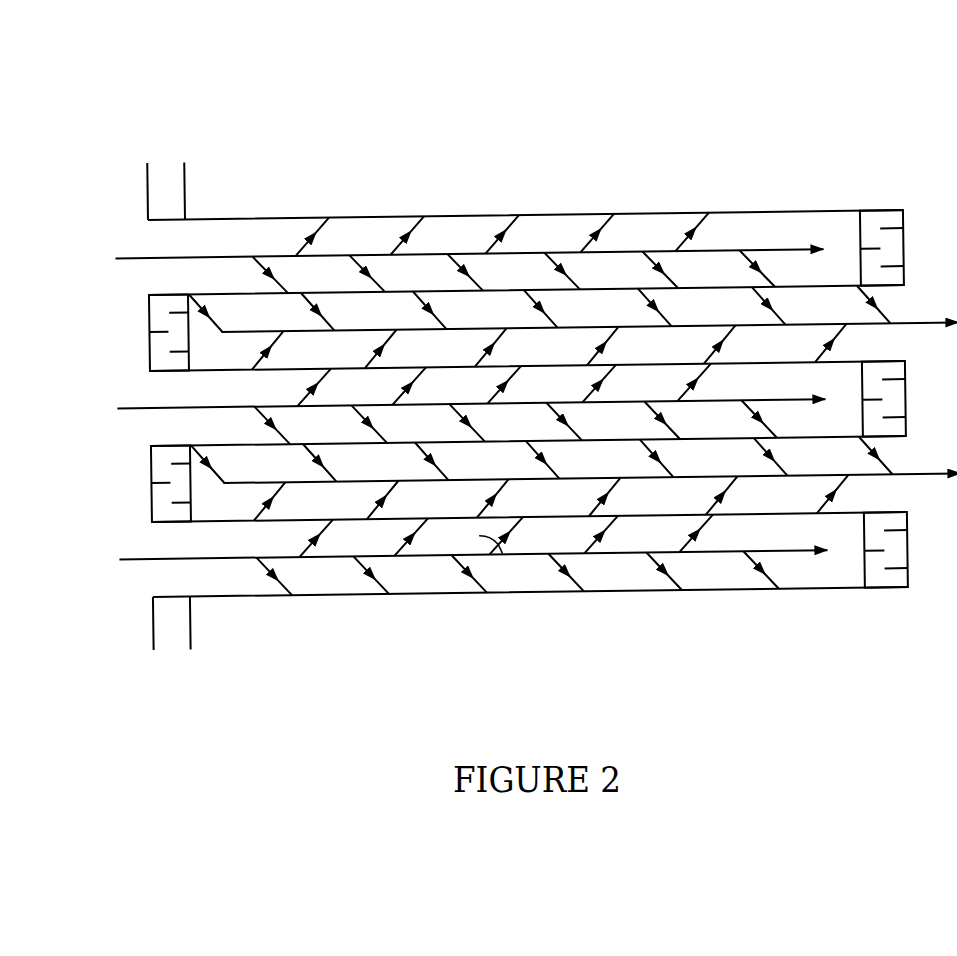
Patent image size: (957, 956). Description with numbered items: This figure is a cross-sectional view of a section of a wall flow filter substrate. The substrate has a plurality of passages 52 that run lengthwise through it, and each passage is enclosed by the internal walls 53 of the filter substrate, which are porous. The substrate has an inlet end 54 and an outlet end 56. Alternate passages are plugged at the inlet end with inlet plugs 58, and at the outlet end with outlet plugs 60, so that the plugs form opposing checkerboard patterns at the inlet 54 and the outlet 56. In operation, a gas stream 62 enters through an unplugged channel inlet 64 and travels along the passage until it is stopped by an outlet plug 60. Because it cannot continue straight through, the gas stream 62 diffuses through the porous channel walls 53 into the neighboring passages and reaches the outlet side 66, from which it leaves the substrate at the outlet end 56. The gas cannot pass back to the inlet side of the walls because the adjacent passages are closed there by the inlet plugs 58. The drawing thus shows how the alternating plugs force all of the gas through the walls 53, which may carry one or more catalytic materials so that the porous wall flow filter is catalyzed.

The passages 52 is at (200, 300).
The internal walls 53 is at (488, 295).
The inlet end 54 is at (126, 172).
The outlet end 56 is at (908, 365).
The inlet plugs 58 is at (148, 197).
The outlet plugs 60 is at (903, 257).
The gas stream 62 is at (233, 258).
The unplugged channel inlet 64 is at (471, 390).
The outlet side 66 is at (589, 419).